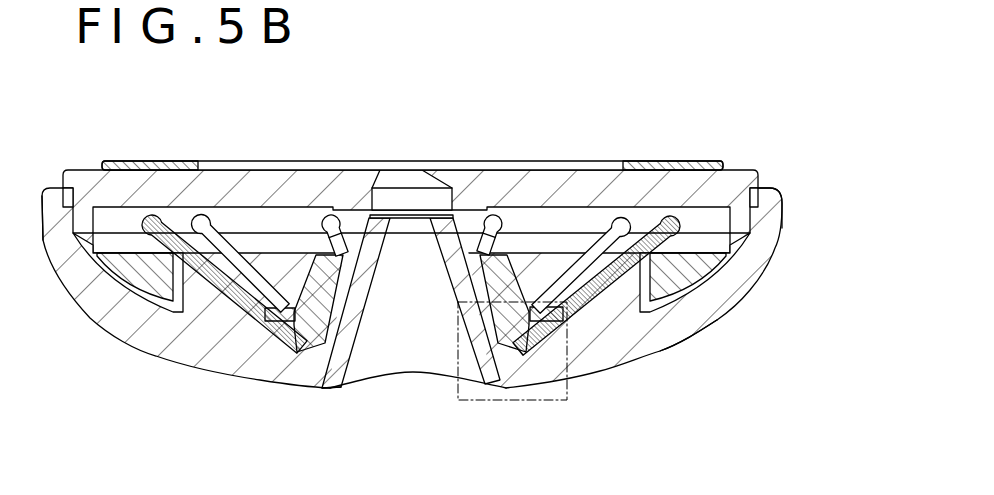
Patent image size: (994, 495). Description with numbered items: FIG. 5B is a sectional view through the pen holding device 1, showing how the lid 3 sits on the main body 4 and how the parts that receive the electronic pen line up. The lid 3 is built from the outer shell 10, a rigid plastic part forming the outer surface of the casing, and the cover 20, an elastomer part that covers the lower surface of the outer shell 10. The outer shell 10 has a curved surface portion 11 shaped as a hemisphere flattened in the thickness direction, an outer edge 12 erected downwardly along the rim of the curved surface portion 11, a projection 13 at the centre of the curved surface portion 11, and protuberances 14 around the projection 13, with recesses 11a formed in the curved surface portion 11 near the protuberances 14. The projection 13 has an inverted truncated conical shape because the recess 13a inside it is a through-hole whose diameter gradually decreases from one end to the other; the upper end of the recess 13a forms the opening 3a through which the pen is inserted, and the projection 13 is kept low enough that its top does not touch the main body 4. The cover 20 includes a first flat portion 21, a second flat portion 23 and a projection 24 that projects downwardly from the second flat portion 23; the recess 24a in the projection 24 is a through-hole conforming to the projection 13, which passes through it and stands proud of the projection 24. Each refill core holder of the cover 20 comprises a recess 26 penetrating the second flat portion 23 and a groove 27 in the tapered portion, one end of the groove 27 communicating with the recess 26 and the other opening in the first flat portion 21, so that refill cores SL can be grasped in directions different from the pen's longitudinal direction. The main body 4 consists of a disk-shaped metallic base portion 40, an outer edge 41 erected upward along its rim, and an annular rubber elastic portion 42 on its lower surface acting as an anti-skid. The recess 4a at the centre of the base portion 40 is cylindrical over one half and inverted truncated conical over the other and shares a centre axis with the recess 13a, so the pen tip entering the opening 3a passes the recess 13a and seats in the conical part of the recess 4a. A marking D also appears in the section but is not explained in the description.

The pen holding device 1 is at (702, 67).
The lid 3 is at (660, 330).
The opening 3a is at (413, 392).
The main body 4 is at (477, 177).
The recess 4a is at (405, 175).
The outer shell 10 is at (783, 234).
The curved surface portion 11 is at (700, 332).
The recess 11a is at (512, 348).
The outer edge 12 is at (783, 194).
The projection 13 is at (368, 232).
The recess 13a is at (357, 340).
The protuberance 14 is at (613, 308).
The cover 20 is at (692, 265).
The first flat portion 21 is at (120, 250).
The second flat portion 23 is at (285, 335).
The projection 24 is at (320, 342).
The recess 24a is at (487, 340).
The recess 26 is at (563, 342).
The groove 27 is at (181, 232).
The base portion 40 is at (570, 170).
The outer edge 41 is at (83, 210).
The elastic portion 42 is at (672, 163).
The refill core SL is at (215, 290).
The region D is at (553, 403).